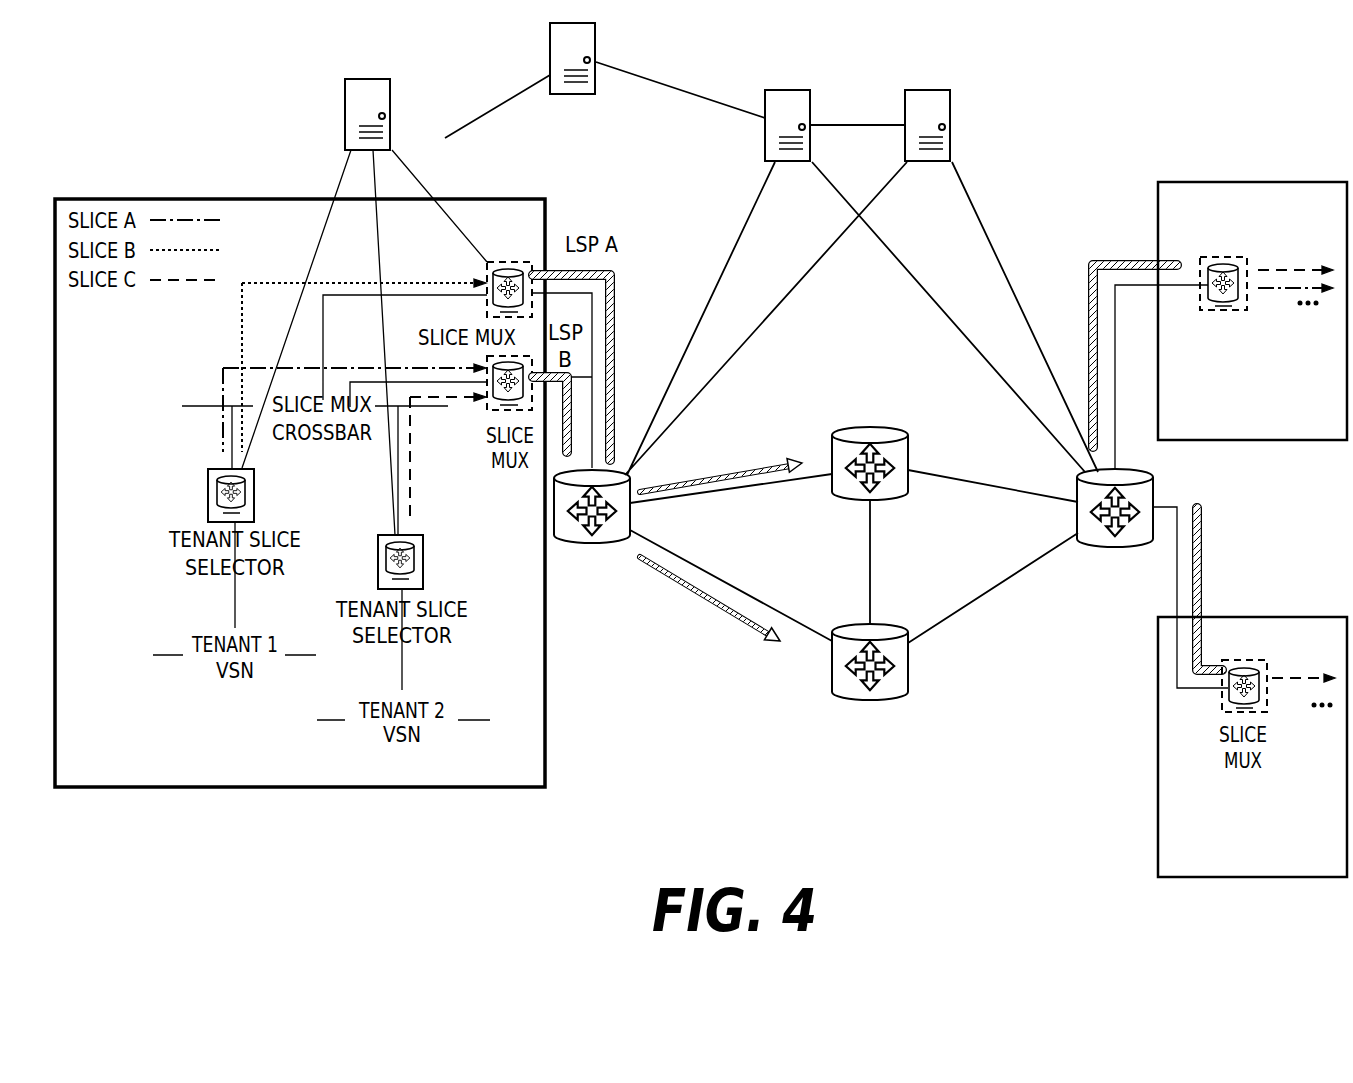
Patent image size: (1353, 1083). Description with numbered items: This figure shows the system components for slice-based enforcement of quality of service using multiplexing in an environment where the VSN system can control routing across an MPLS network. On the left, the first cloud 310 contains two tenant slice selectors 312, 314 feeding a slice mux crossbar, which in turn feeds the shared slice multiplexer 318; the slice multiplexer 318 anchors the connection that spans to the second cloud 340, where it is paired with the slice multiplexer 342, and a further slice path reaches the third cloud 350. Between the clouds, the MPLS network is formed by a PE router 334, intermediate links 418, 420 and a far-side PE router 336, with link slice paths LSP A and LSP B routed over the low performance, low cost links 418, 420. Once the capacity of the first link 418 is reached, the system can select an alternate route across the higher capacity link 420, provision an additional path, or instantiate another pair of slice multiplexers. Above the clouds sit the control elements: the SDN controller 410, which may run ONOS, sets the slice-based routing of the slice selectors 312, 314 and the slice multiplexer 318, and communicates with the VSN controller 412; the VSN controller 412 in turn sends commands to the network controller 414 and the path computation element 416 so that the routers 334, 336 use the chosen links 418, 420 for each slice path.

The first cloud 310 is at (105, 777).
The slice selector 312 is at (208, 490).
The slice selector 314 is at (423, 563).
The slice multiplexer 318 is at (508, 262).
The router 334 is at (630, 515).
The router 336 is at (1078, 518).
The second cloud 340 is at (1207, 216).
The slice multiplexer 342 is at (1238, 268).
The third cloud 350 is at (1268, 862).
The SDN controller 410 is at (345, 112).
The VSN controller 412 is at (550, 43).
The network controller 414 is at (812, 110).
The path computation element 416 is at (952, 105).
The link 418 is at (868, 430).
The link 420 is at (880, 700).